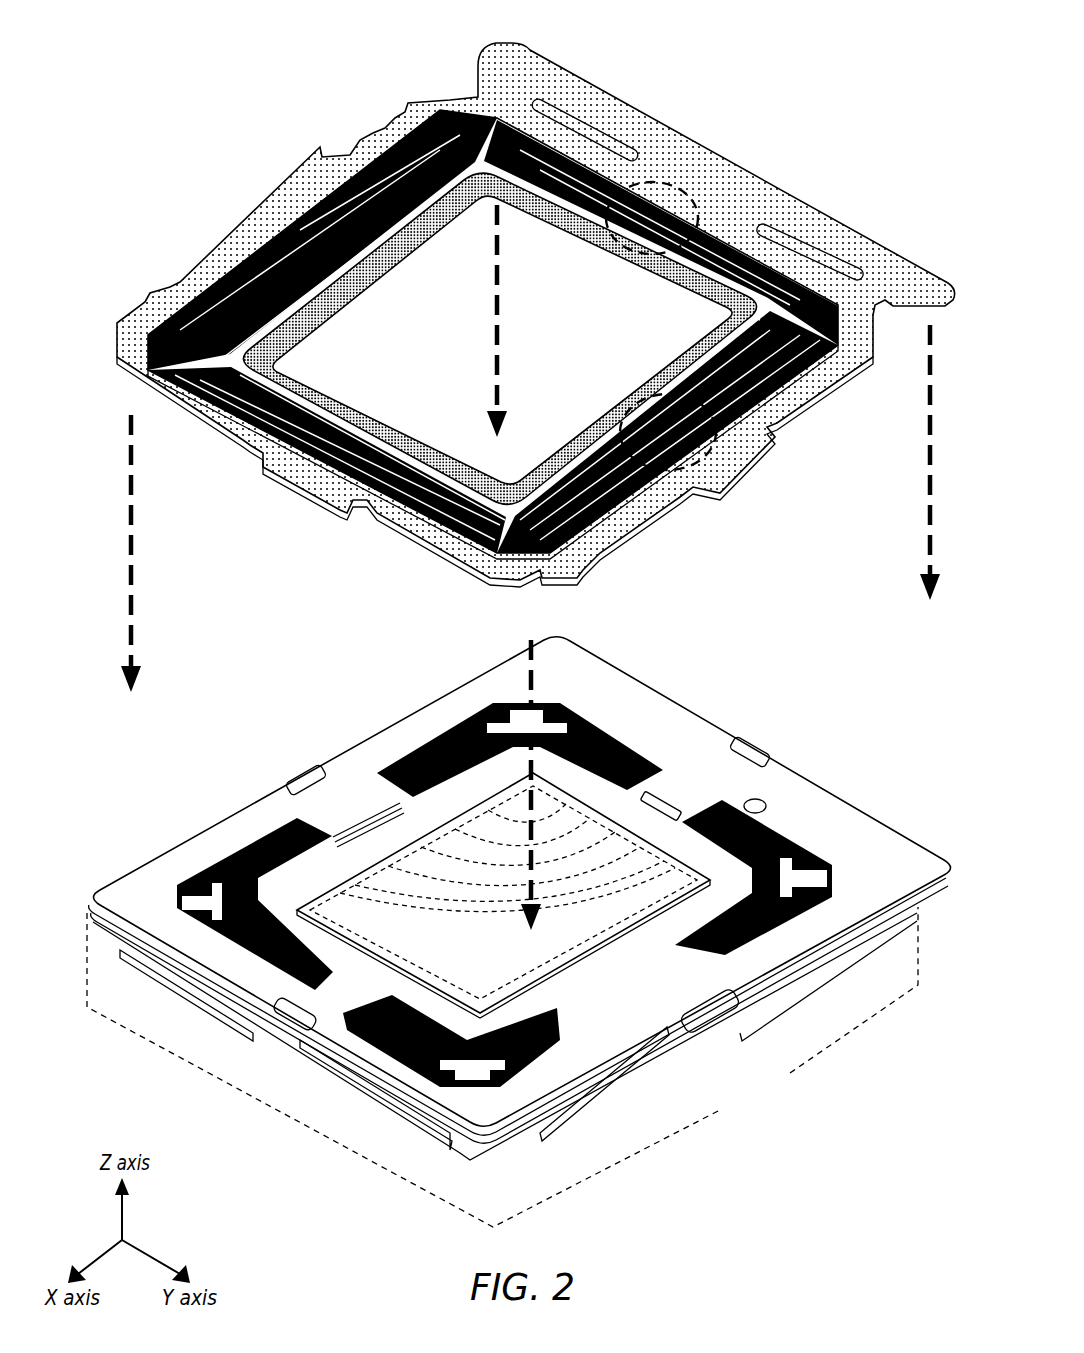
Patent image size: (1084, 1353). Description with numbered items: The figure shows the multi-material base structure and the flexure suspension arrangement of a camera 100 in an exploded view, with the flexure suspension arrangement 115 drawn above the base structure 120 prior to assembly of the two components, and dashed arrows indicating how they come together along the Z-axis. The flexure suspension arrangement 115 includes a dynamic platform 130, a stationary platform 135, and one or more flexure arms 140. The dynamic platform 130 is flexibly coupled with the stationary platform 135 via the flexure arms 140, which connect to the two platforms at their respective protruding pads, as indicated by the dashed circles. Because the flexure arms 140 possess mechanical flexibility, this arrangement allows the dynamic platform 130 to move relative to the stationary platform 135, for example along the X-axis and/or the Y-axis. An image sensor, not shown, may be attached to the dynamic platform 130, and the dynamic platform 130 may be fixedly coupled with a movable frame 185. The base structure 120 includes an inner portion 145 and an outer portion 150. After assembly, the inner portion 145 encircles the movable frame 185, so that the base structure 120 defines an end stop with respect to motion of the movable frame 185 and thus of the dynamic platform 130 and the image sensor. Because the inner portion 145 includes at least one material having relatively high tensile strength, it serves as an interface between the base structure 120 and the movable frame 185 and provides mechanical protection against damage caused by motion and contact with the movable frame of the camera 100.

The camera 100 is at (168, 38).
The flexure suspension arrangement 115 is at (712, 158).
The base structure 120 is at (733, 1067).
The dynamic platform 130 is at (594, 432).
The stationary platform 135 is at (240, 222).
The flexure arms 140 is at (273, 380).
The inner portion 145 is at (233, 867).
The outer portion 150 is at (830, 794).
The movable frame 185 is at (383, 840).